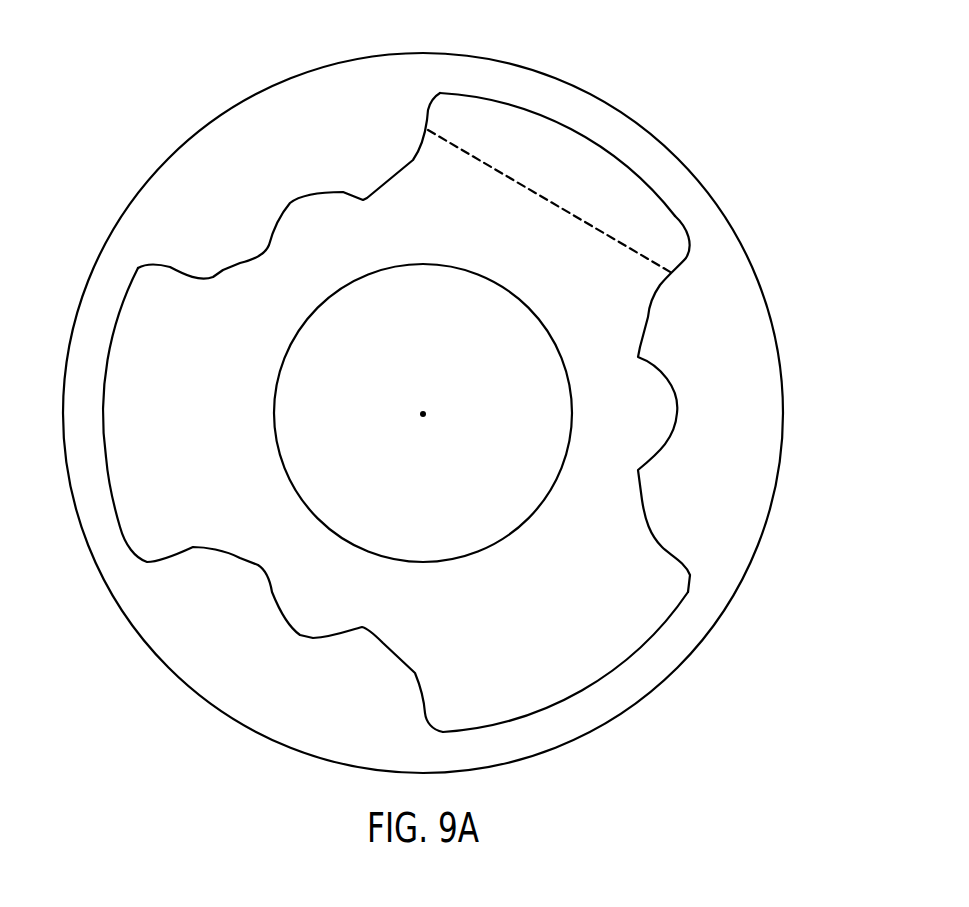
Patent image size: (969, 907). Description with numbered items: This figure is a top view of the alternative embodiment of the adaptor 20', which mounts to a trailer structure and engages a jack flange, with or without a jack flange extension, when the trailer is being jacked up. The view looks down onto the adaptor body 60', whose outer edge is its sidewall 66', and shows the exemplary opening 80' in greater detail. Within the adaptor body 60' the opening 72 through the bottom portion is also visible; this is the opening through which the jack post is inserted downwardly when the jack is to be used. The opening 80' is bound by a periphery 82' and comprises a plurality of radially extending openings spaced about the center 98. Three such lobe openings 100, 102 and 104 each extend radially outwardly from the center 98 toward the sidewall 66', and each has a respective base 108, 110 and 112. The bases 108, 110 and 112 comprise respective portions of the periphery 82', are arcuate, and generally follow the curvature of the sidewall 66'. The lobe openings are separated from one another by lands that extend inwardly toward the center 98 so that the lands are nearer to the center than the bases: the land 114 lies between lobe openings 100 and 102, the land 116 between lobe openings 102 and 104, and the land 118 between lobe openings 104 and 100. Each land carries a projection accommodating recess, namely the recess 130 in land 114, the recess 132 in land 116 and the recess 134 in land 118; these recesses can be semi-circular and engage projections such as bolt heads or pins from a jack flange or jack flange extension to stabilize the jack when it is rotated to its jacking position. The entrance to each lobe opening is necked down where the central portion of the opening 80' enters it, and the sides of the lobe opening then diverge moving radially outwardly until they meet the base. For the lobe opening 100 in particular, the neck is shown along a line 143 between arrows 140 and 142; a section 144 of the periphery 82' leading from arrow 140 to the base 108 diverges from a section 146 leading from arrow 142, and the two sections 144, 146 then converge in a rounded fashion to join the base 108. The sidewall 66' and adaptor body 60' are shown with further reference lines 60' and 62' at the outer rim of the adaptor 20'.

The adaptor 20' is at (705, 130).
The adaptor body 60' is at (438, 413).
The housing annular wall 62' is at (742, 209).
The sidewall 66' is at (772, 236).
The opening 72 is at (508, 489).
The opening 80' is at (575, 90).
The periphery 82' is at (205, 185).
The center 98 is at (422, 392).
The lobe opening 100 is at (585, 157).
The lobe opening 102 is at (122, 363).
The lobe opening 104 is at (588, 663).
The base 108 is at (638, 168).
The base 110 is at (104, 468).
The base 112 is at (505, 718).
The land 114 is at (398, 150).
The land 116 is at (233, 577).
The land 118 is at (662, 488).
The projection accommodating recess 130 is at (300, 217).
The projection accommodating recess 132 is at (300, 620).
The projection accommodating recess 134 is at (662, 398).
The arrow 140 is at (673, 271).
The arrow 142 is at (424, 129).
The line 143 is at (540, 194).
The section of the periphery 144 is at (682, 262).
The section of the periphery 146 is at (452, 99).